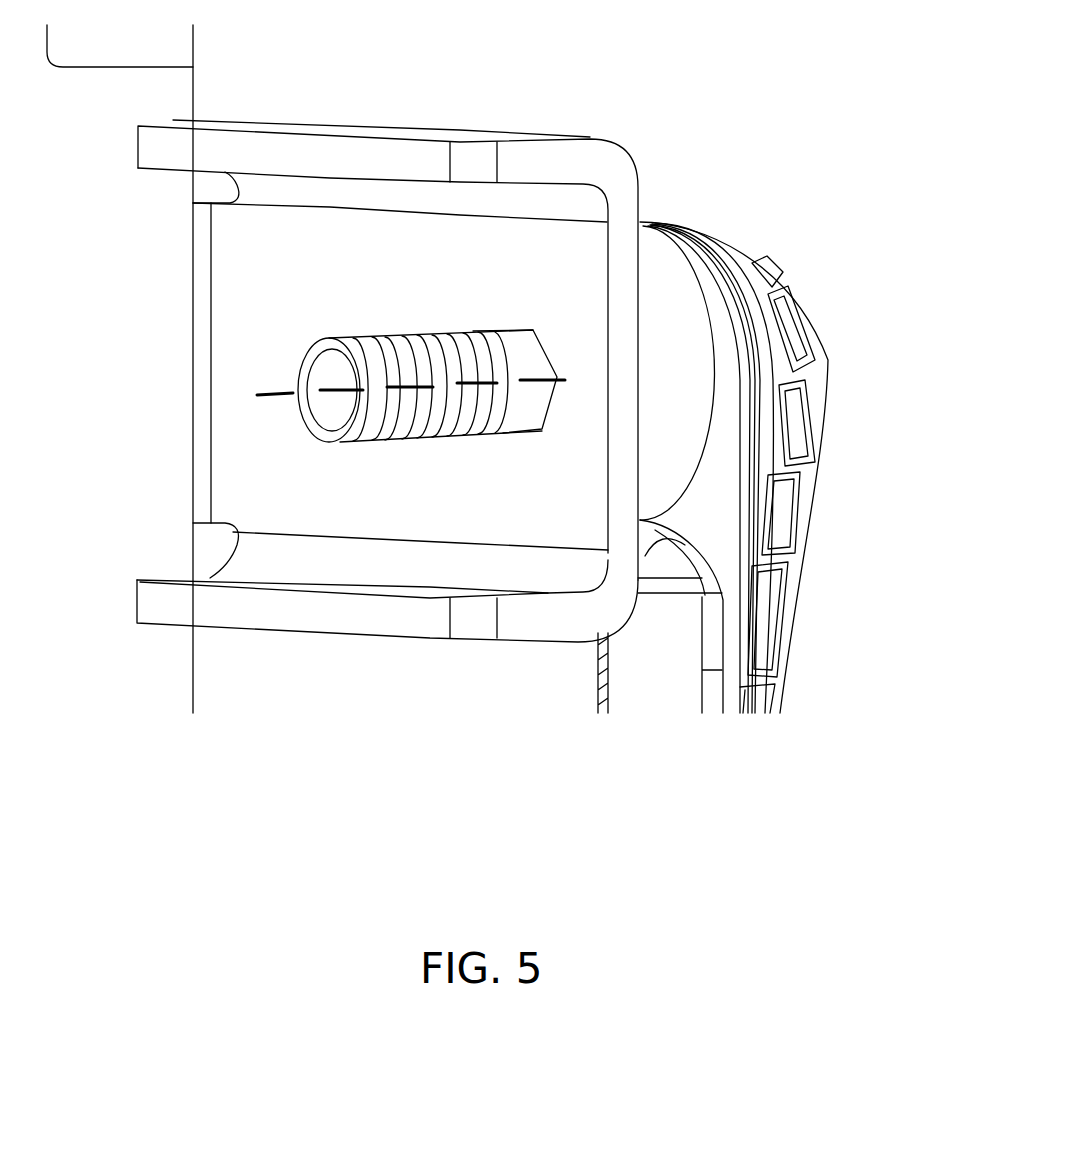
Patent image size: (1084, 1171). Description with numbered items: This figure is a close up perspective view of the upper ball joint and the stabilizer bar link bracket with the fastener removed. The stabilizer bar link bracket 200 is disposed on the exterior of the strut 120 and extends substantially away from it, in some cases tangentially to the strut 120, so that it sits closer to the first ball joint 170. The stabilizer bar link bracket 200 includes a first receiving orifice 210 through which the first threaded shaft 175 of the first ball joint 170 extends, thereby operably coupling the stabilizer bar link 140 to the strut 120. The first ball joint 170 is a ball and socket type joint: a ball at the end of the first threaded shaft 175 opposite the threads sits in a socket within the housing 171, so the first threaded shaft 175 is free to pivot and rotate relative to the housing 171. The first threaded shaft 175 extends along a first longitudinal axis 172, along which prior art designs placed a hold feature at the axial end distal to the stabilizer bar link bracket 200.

The strut 120 is at (155, 86).
The stabilizer bar link bracket 200 is at (407, 155).
The first receiving orifice 210 is at (548, 350).
The first threaded shaft 175 is at (330, 358).
The first longitudinal axis 172 is at (257, 393).
The first ball joint 170 is at (785, 223).
The housing 171 is at (780, 285).
The stabilizer bar link 140 is at (838, 535).